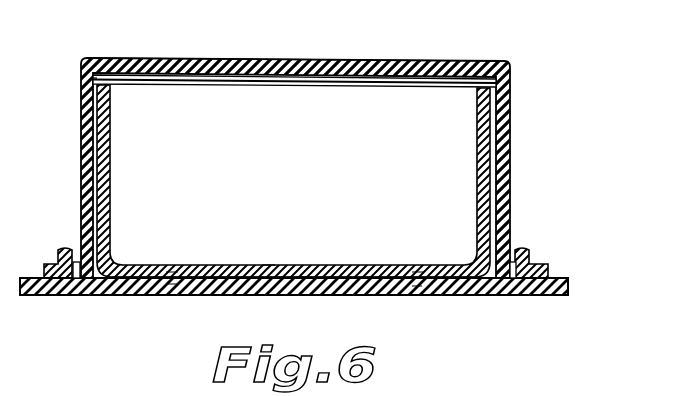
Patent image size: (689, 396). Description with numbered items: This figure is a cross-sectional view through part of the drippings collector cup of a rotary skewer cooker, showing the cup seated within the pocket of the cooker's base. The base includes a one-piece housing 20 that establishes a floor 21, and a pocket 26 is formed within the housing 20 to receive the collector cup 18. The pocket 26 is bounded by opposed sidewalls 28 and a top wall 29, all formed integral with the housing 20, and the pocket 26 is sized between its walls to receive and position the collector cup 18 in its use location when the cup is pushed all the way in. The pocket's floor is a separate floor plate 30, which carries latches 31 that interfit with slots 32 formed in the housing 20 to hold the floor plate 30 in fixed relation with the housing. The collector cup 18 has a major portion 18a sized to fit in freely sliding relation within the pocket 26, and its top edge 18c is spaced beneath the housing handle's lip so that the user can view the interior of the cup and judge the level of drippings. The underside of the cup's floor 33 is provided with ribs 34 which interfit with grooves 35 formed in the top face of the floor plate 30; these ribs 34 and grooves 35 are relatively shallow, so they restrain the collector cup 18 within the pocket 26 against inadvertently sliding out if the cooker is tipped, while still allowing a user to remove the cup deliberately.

The collector cup 18 is at (256, 232).
The major portion 18a is at (320, 188).
The top edge 18c is at (352, 86).
The housing 20 is at (42, 280).
The floor 21 is at (43, 296).
The pocket 26 is at (100, 81).
The sidewalls 28 is at (81, 132).
The top wall 29 is at (249, 64).
The floor plate 30 is at (302, 279).
The latches 31 is at (70, 257).
The slots 32 is at (76, 284).
The floor 33 is at (268, 266).
The ribs 34 is at (173, 267).
The grooves 35 is at (173, 286).